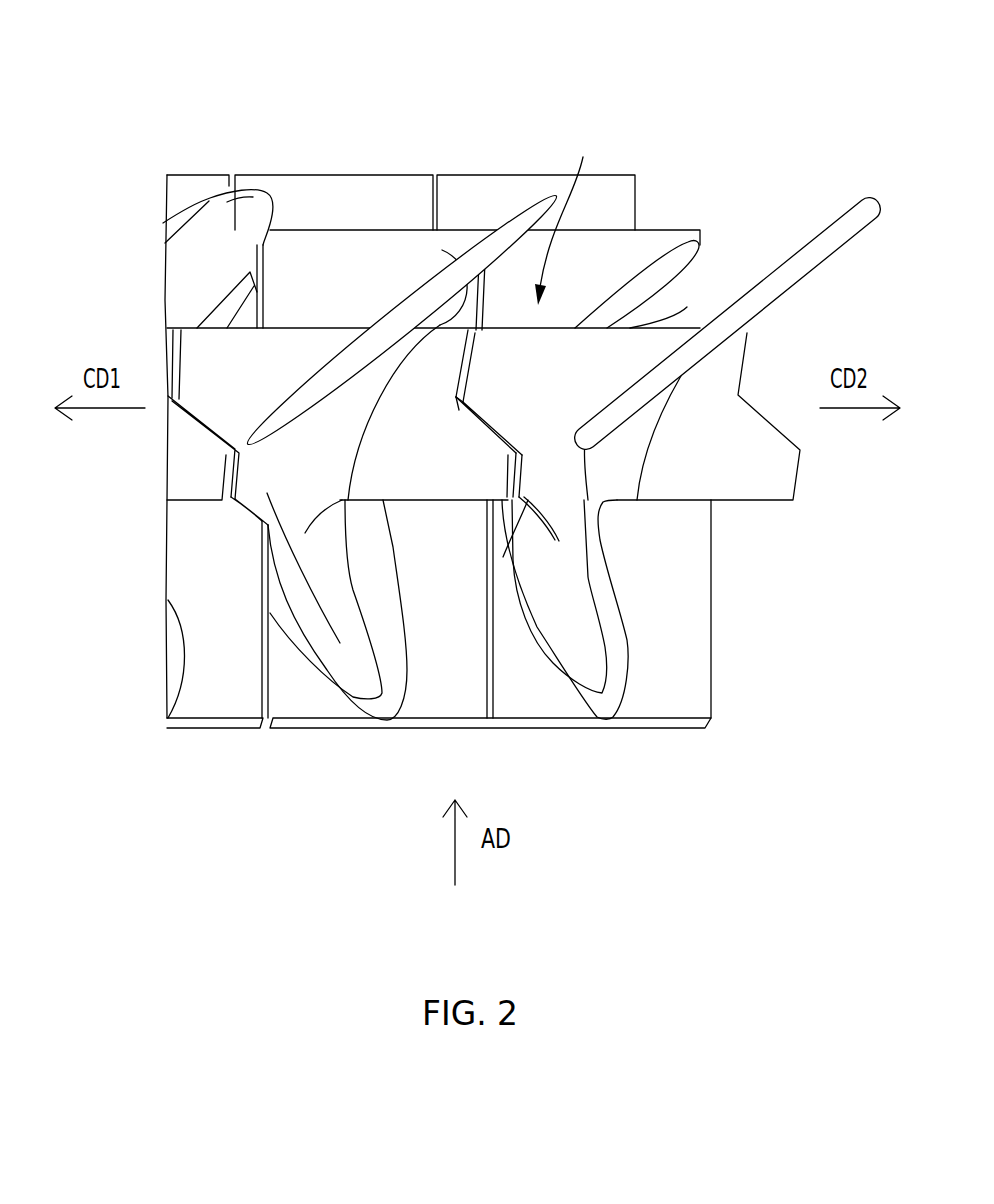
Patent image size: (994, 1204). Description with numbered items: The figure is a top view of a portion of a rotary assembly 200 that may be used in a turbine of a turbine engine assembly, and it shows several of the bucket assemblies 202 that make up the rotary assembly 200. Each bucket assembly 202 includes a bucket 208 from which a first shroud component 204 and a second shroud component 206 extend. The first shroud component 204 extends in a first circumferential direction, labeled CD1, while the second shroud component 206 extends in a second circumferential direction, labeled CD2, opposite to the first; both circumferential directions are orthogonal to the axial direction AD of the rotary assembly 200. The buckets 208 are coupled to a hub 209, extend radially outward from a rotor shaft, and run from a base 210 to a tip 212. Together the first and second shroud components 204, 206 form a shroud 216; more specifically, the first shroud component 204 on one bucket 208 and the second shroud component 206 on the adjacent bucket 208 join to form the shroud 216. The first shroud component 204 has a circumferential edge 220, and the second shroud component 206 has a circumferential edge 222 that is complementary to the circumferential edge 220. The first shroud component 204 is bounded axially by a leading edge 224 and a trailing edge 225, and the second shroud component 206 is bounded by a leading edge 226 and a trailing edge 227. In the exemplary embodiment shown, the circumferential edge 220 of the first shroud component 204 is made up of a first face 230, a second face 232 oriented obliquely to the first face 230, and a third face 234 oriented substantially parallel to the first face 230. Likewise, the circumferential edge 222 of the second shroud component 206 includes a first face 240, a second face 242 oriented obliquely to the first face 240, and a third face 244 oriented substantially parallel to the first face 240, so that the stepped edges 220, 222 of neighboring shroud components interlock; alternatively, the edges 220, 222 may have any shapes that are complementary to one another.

The rotary assembly 200 is at (324, 76).
The bucket assembly 202 is at (360, 670).
The first shroud component 204 is at (287, 343).
The second shroud component 206 is at (457, 490).
The bucket 208 is at (350, 657).
The hub 209 is at (520, 708).
The base 210 is at (628, 683).
The tip 212 is at (793, 275).
The shroud 216 is at (568, 216).
The circumferential edge 220 is at (497, 437).
The circumferential edge 222 is at (463, 413).
The leading edge 224 is at (503, 557).
The trailing edge 225 is at (502, 327).
The leading edge 226 is at (414, 499).
The trailing edge 227 is at (478, 236).
The first face 230 is at (470, 360).
The second face 232 is at (467, 420).
The third face 234 is at (527, 477).
The first face 240 is at (449, 387).
The second face 242 is at (470, 417).
The third face 244 is at (513, 473).